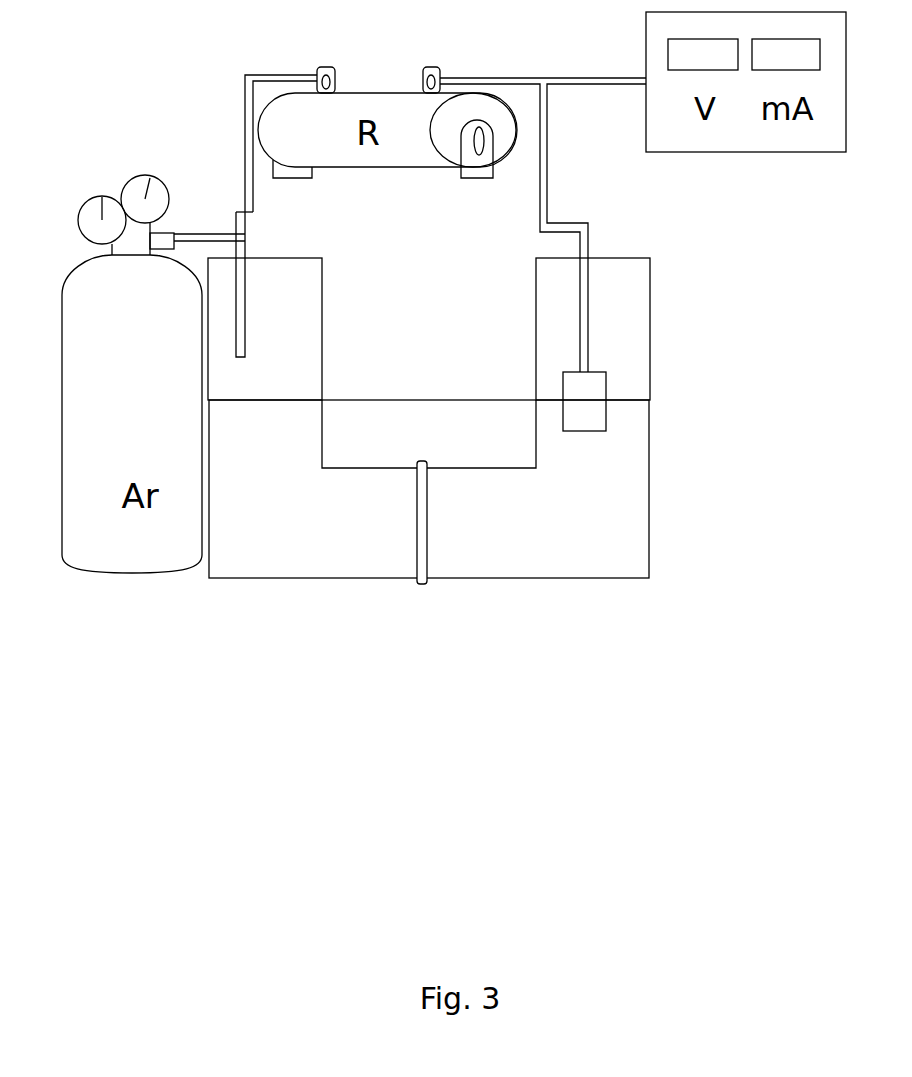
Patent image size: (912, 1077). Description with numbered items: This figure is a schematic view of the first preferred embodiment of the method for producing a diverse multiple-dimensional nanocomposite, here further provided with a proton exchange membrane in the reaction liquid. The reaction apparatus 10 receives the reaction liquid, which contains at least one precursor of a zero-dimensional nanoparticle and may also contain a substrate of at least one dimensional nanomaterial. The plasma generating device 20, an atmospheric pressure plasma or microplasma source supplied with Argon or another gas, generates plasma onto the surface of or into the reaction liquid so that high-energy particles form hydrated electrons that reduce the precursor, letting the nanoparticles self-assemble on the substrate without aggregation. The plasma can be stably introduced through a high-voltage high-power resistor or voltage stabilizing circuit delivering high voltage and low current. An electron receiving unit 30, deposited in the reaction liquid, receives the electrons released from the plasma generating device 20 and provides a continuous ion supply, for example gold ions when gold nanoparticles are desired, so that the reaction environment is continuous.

The reaction apparatus 10 is at (684, 470).
The plasma generating device 20 is at (252, 393).
The electron receiving unit 30 is at (586, 423).